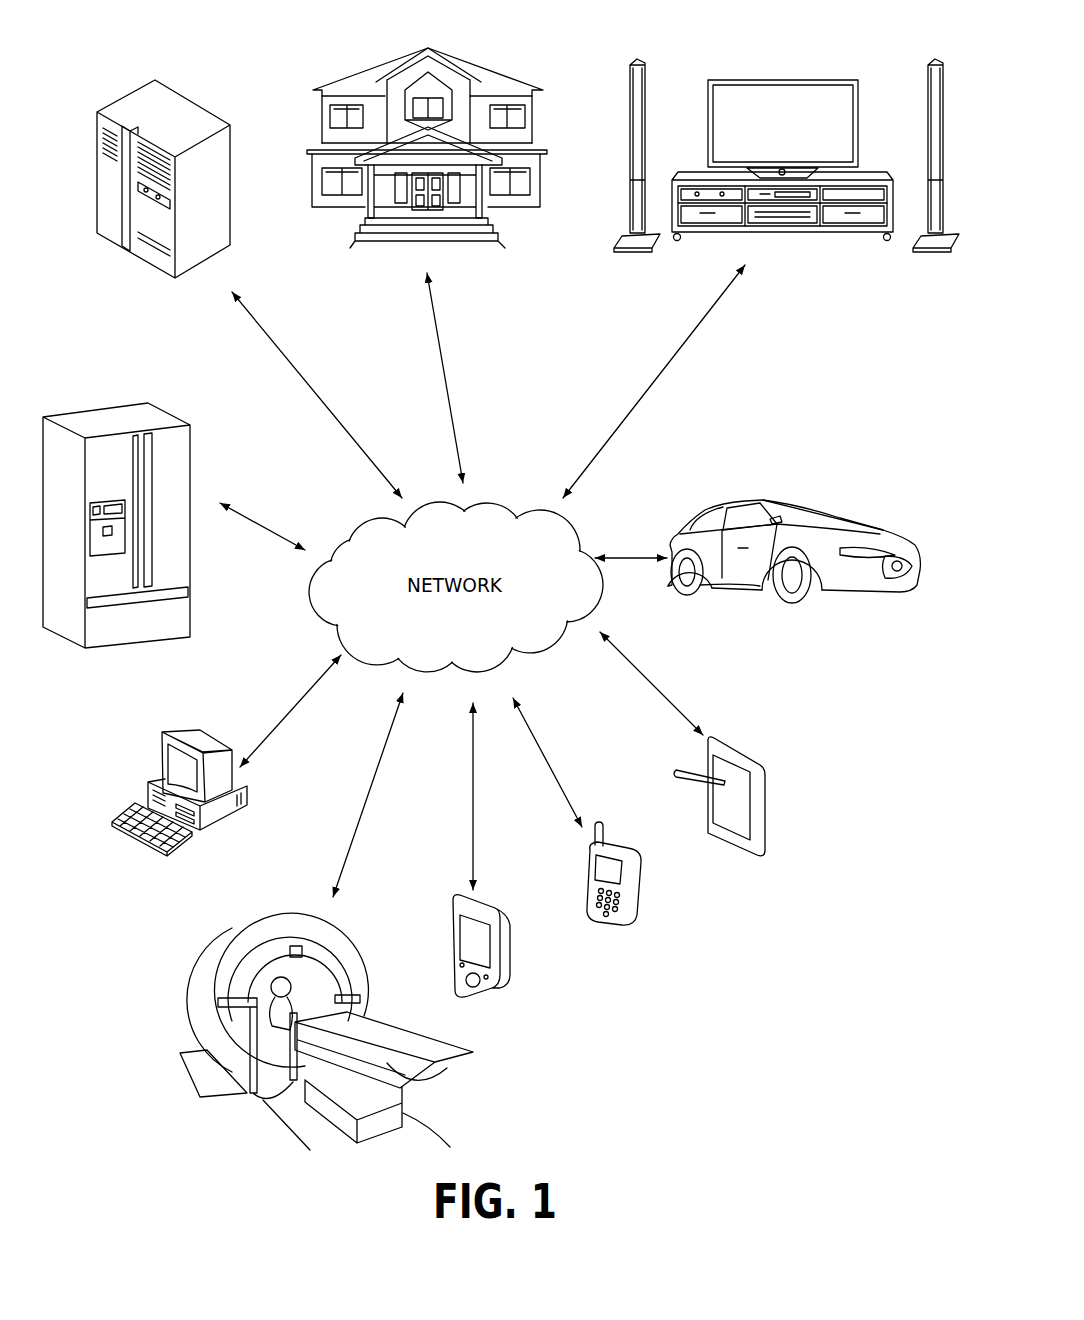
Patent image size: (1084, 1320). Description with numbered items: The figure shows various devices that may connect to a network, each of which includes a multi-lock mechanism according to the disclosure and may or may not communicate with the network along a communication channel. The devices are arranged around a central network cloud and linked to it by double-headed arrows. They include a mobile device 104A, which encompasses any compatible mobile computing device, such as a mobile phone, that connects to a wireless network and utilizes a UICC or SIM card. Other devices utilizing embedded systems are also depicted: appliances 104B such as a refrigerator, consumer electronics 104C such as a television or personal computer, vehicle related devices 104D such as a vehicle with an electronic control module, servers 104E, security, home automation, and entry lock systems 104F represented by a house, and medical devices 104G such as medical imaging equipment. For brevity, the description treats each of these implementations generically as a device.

The mobile device 104A is at (502, 992).
The appliances 104B is at (117, 410).
The consumer electronics 104C is at (780, 88).
The vehicle related devices 104D is at (780, 500).
The servers 104E is at (170, 100).
The security systems, home automation systems, entry lock systems 104F is at (488, 72).
The medical devices 104G is at (207, 947).